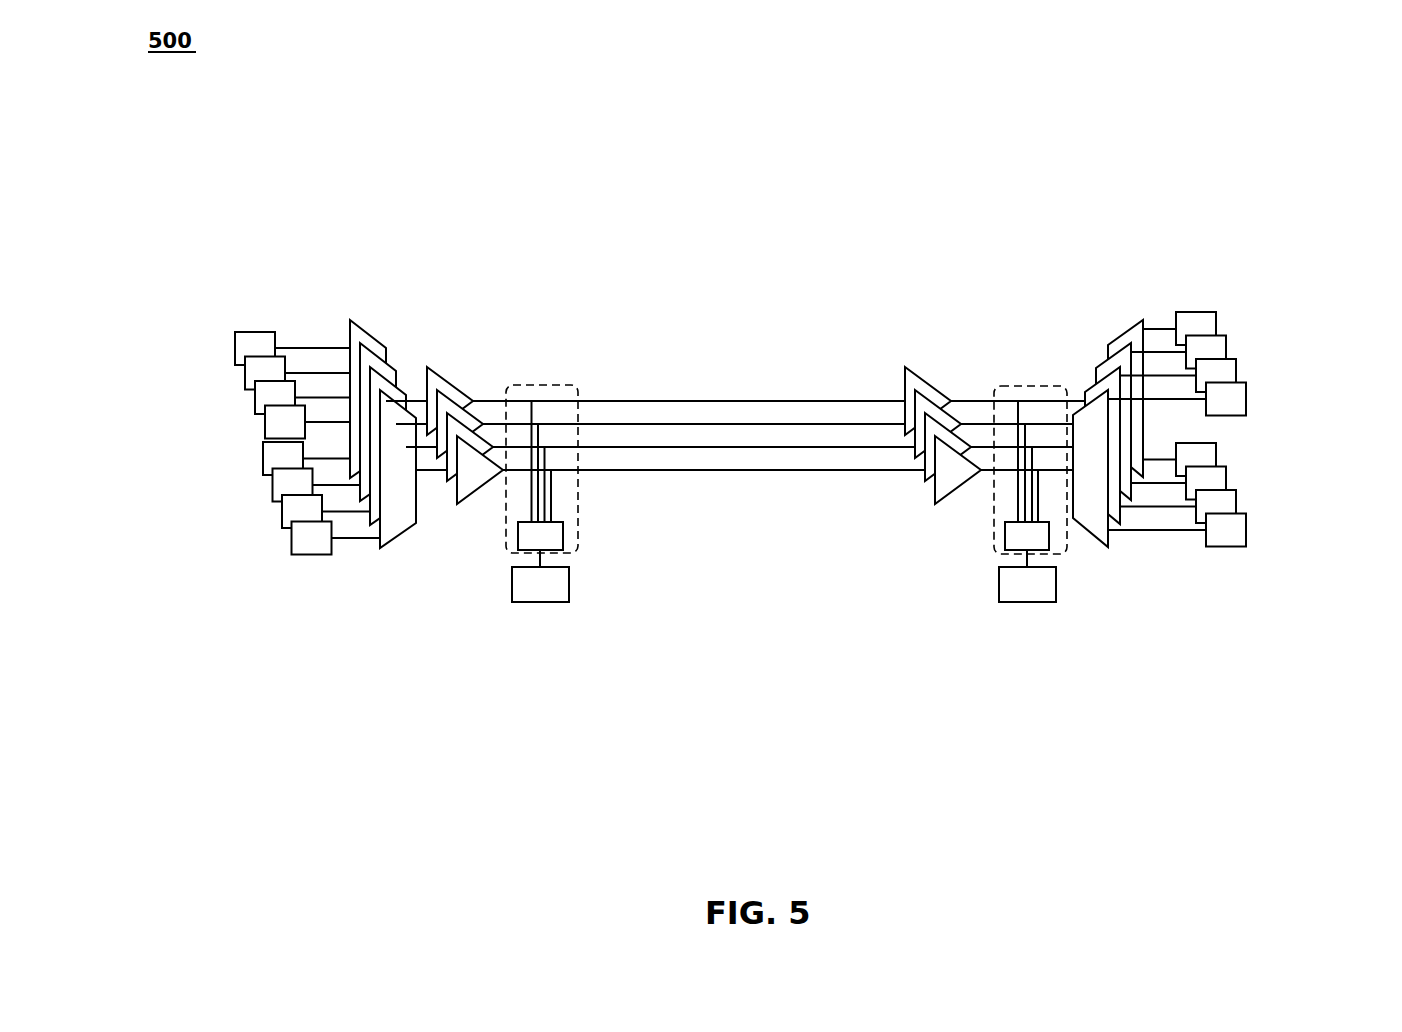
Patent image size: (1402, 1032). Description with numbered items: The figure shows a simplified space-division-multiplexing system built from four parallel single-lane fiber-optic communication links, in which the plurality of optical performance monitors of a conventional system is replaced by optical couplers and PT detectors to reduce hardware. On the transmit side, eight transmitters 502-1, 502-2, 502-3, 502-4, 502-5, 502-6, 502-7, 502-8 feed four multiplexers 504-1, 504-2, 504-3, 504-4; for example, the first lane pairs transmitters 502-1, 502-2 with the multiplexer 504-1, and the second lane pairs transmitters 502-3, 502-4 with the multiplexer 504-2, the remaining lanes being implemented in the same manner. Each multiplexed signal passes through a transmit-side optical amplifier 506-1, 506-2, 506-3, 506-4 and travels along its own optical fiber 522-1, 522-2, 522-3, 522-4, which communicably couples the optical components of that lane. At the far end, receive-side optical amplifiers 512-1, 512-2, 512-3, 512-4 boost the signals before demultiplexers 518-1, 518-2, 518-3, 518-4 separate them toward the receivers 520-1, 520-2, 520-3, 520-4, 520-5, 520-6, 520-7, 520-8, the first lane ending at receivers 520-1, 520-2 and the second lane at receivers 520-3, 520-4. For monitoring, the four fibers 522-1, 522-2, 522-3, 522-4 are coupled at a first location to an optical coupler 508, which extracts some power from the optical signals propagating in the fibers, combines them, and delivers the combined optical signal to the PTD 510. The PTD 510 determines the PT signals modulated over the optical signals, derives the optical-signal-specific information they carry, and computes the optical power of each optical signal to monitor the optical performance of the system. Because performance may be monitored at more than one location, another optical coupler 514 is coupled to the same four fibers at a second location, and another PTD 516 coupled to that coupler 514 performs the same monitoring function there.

The transmitter 502-1 is at (290, 538).
The transmitter 502-2 is at (264, 422).
The transmitter 502-3 is at (281, 511).
The transmitter 502-4 is at (254, 398).
The transmitter 502-5 is at (271, 485).
The transmitter 502-6 is at (244, 373).
The transmitter 502-7 is at (262, 458).
The transmitter 502-8 is at (234, 348).
The multiplexer 504-1 is at (403, 543).
The multiplexer 504-2 is at (408, 378).
The multiplexer 504-3 is at (396, 356).
The multiplexer 504-4 is at (363, 318).
The optical amplifier 506-1 is at (509, 458).
The optical amplifier 506-2 is at (495, 422).
The optical amplifier 506-3 is at (485, 397).
The optical amplifier 506-4 is at (463, 369).
The optical coupler 508 is at (570, 533).
The PTD 510 is at (572, 588).
The optical amplifier 512-1 is at (982, 455).
The optical amplifier 512-2 is at (958, 414).
The optical amplifier 512-3 is at (940, 390).
The optical amplifier 512-4 is at (914, 364).
The optical coupler 514 is at (1003, 533).
The PTD 516 is at (997, 589).
The demultiplexer 518-1 is at (1100, 546).
The demultiplexer 518-2 is at (1089, 379).
The demultiplexer 518-3 is at (1113, 351).
The demultiplexer 518-4 is at (1132, 324).
The receiver 520-1 is at (1247, 530).
The receiver 520-2 is at (1247, 400).
The receiver 520-3 is at (1237, 507).
The receiver 520-4 is at (1237, 376).
The receiver 520-5 is at (1227, 483).
The receiver 520-6 is at (1227, 352).
The receiver 520-7 is at (1217, 460).
The receiver 520-8 is at (1217, 329).
The optical fiber 522-1 is at (815, 466).
The optical fiber 522-2 is at (775, 443).
The optical fiber 522-3 is at (735, 420).
The optical fiber 522-4 is at (693, 397).